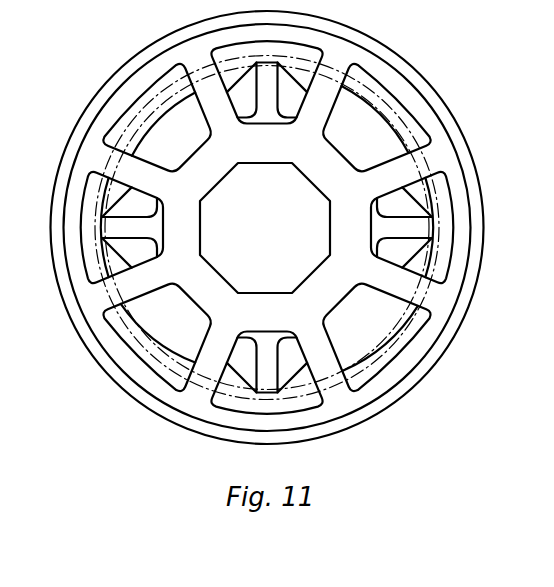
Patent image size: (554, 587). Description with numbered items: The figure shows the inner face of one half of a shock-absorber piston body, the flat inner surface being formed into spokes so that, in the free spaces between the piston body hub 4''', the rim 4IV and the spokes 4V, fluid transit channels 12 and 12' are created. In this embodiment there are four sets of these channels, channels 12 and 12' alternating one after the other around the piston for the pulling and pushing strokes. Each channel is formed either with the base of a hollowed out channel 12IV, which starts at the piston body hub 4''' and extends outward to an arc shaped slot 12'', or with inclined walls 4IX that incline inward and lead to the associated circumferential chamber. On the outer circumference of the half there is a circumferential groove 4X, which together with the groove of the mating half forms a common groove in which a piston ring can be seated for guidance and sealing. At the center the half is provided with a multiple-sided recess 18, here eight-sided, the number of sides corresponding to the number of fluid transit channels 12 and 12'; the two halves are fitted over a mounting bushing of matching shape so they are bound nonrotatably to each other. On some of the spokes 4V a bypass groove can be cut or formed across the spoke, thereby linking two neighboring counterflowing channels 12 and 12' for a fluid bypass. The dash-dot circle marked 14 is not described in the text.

The fluid transit channel 12 is at (152, 124).
The fluid transit channel 12' is at (166, 227).
The arc shaped slot 12'' is at (290, 403).
The hollowed out channel 12IV is at (265, 366).
The multiple-sided recess 18 is at (305, 186).
The ring / pitch circle 14 is at (420, 162).
The circumferential groove 4X is at (505, 209).
The spoke 4V is at (377, 272).
The rim 4IV is at (423, 348).
The oblique wall 4IX is at (385, 357).
The piston body hub 4''' is at (152, 350).